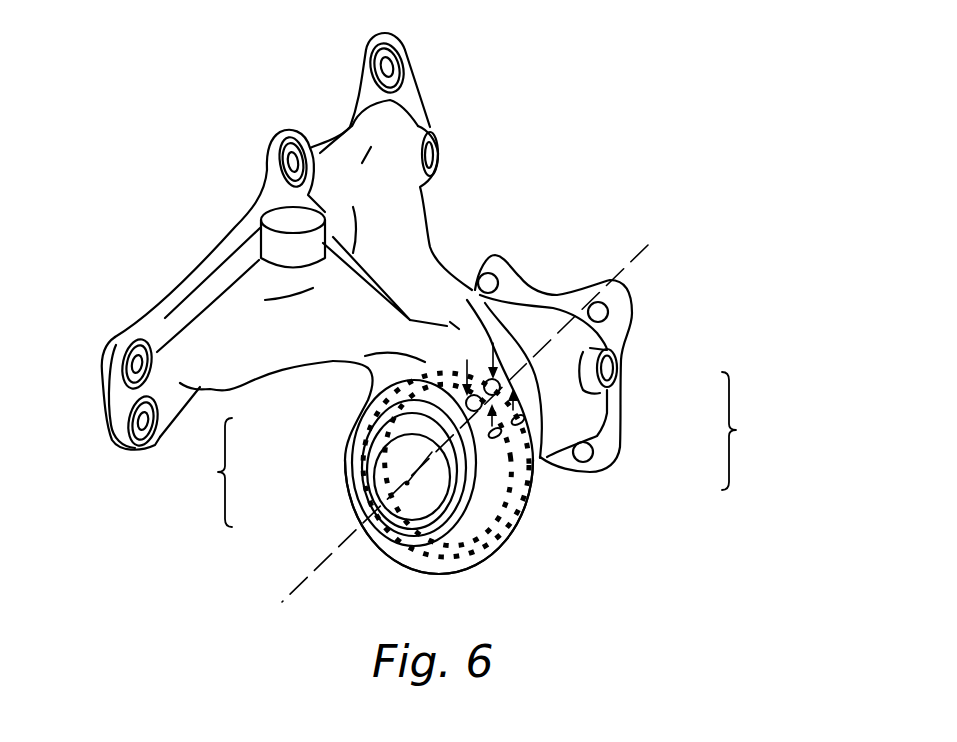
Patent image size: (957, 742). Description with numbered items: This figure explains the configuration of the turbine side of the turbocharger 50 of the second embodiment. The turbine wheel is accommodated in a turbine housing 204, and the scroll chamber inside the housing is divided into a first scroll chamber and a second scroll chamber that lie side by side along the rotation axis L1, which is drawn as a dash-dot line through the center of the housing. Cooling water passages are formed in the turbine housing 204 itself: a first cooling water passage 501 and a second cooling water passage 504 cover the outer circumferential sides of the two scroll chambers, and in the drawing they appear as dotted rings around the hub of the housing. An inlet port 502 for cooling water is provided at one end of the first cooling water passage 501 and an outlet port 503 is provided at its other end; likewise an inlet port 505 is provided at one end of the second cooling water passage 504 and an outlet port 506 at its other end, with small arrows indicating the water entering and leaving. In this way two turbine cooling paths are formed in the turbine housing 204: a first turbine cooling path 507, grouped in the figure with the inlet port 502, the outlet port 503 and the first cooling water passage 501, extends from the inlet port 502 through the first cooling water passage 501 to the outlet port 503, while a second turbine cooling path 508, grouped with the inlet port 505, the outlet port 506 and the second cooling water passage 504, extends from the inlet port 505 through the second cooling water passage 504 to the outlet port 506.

The turbocharger 50 is at (572, 152).
The turbine housing 204 is at (430, 566).
The first cooling water passage 501 is at (527, 503).
The inlet port 502 is at (500, 383).
The outlet port 503 is at (527, 424).
The second cooling water passage 504 is at (392, 528).
The inlet port 505 is at (465, 403).
The outlet port 506 is at (490, 437).
The first turbine cooling path 507 is at (757, 431).
The second turbine cooling path 508 is at (202, 472).
The rotation axis L1 is at (481, 408).